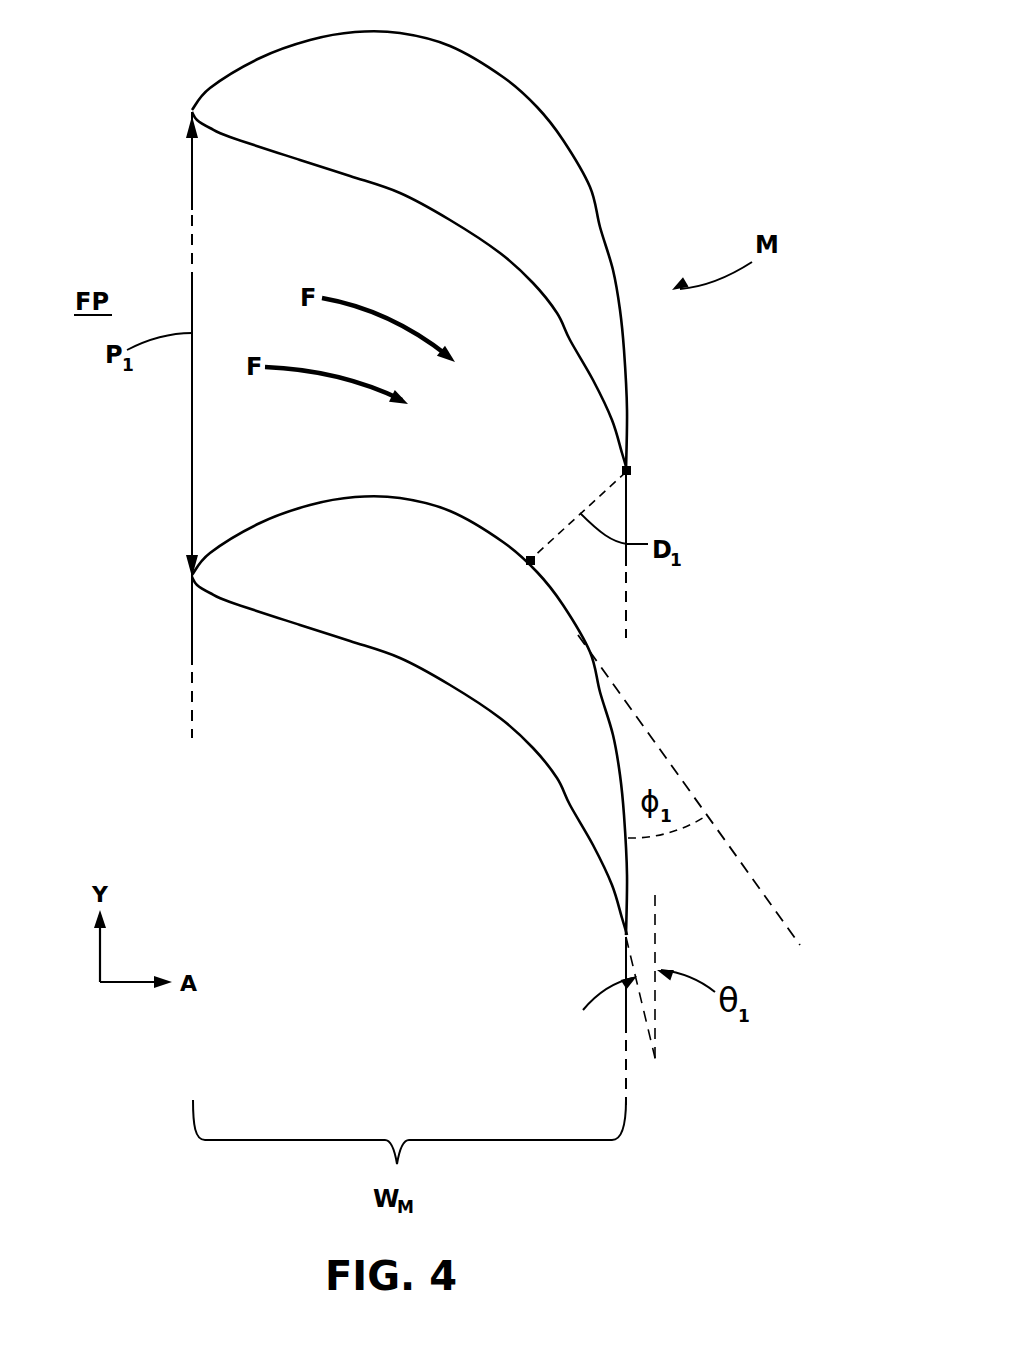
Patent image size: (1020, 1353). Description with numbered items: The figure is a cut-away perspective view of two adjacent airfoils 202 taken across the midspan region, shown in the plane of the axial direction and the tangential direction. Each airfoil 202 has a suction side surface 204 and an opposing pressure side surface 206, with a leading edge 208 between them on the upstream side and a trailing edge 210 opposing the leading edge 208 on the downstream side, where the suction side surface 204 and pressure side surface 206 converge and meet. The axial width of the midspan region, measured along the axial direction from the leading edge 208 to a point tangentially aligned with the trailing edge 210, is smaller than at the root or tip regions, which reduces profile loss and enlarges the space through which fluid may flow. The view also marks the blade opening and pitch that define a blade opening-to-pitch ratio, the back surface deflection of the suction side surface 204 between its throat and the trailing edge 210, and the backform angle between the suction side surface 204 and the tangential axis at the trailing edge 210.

The airfoil 202 is at (409, 474).
The suction side surface 204 is at (498, 74).
The pressure side surface 206 is at (397, 196).
The leading edge 208 is at (192, 190).
The trailing edge 210 is at (628, 474).